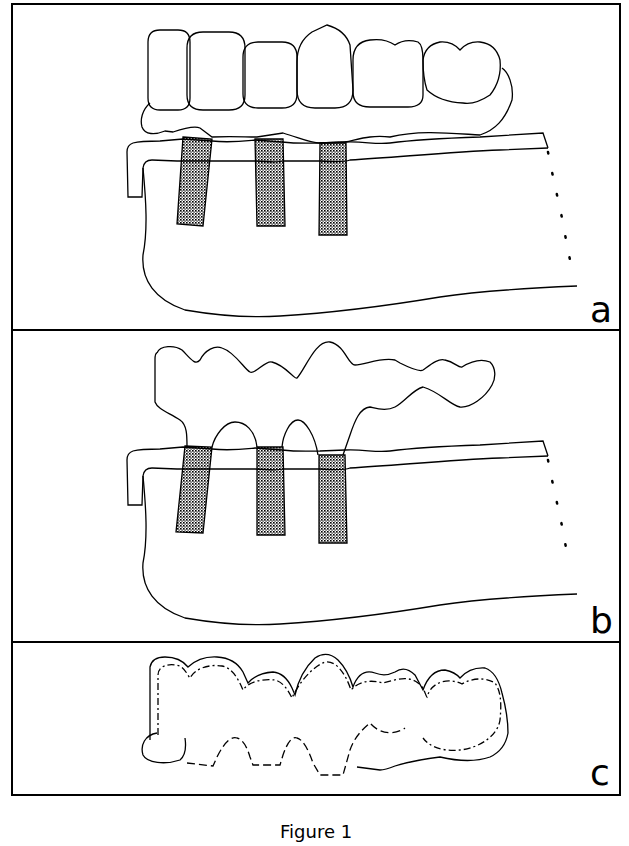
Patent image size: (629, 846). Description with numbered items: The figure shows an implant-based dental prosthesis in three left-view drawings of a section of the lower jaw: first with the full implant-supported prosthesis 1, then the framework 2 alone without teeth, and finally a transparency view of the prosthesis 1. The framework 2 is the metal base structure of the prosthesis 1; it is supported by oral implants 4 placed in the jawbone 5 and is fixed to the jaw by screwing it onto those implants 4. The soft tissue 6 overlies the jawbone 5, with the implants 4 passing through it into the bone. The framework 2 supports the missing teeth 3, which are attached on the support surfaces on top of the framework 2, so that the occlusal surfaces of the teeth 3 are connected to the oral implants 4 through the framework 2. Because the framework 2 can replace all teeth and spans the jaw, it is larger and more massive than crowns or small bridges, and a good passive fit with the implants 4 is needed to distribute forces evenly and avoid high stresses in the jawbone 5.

The prosthesis 1 is at (65, 43).
The framework 2 is at (197, 132).
The teeth 3 is at (210, 84).
The oral implants 4 is at (187, 200).
The jawbone 5 is at (197, 264).
The soft tissue 6 is at (140, 153).